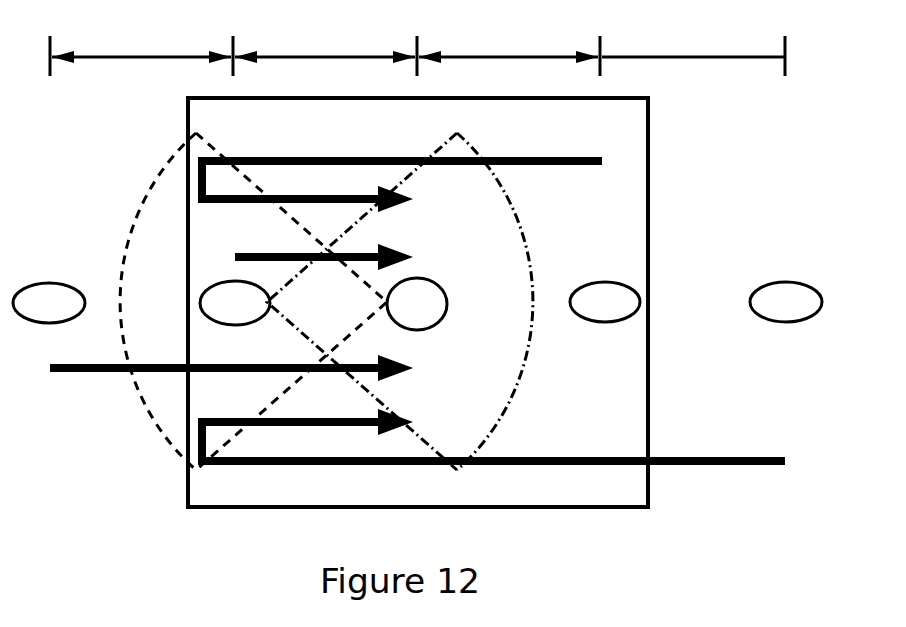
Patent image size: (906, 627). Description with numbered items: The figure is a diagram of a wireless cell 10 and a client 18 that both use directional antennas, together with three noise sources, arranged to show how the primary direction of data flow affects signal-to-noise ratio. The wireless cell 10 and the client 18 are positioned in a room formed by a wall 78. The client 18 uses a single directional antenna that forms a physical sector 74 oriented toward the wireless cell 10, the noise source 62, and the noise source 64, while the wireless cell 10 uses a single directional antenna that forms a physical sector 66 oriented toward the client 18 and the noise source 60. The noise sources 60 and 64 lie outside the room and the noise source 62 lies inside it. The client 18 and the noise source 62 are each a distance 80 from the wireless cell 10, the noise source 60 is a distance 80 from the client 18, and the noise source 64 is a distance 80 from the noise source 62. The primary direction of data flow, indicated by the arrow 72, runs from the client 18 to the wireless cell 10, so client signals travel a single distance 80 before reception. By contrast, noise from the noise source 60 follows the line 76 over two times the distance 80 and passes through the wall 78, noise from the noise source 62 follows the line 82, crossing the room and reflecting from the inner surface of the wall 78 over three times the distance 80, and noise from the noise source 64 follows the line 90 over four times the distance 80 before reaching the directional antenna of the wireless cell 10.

The wireless cell 10 is at (403, 317).
The client 18 is at (221, 316).
The noise source 60 is at (35, 316).
The noise source 62 is at (591, 315).
The noise source 64 is at (772, 315).
The physical sector 66 is at (170, 440).
The arrow 72 is at (255, 252).
The physical sector 74 is at (530, 247).
The line 76 is at (76, 375).
The wall 78 is at (650, 506).
The distance 80 is at (145, 38).
The line 82 is at (600, 148).
The line 90 is at (732, 466).